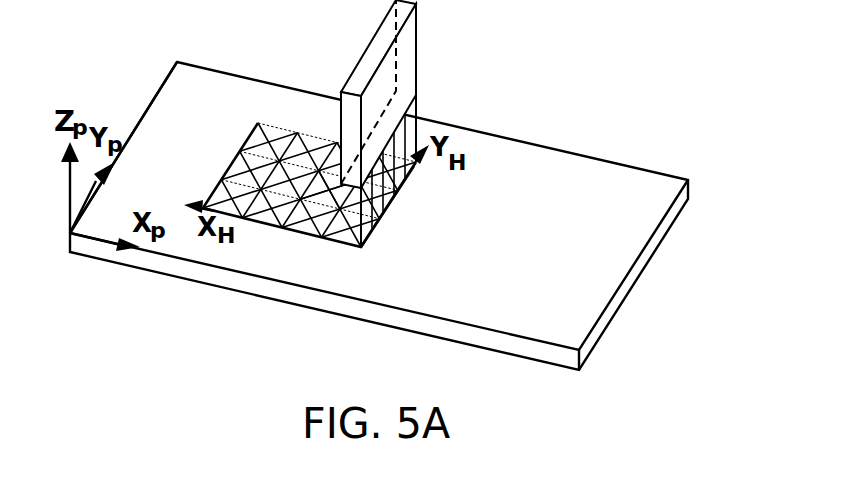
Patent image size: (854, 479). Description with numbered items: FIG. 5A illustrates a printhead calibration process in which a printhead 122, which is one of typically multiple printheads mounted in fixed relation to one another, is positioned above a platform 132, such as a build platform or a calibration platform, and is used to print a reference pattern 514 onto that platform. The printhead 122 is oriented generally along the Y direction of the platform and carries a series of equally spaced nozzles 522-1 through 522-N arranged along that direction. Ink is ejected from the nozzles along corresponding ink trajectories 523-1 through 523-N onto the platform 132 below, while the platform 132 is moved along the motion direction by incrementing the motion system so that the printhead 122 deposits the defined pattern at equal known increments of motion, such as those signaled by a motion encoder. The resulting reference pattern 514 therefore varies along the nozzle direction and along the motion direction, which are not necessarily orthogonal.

The platform 132 is at (632, 166).
The reference pattern 514 is at (280, 137).
The printhead 122 is at (424, 94).
The nozzle 522-1 is at (332, 202).
The nozzle 522-N is at (398, 93).
The ink trajectory 523-1 is at (363, 237).
The ink trajectory 523-N is at (417, 133).